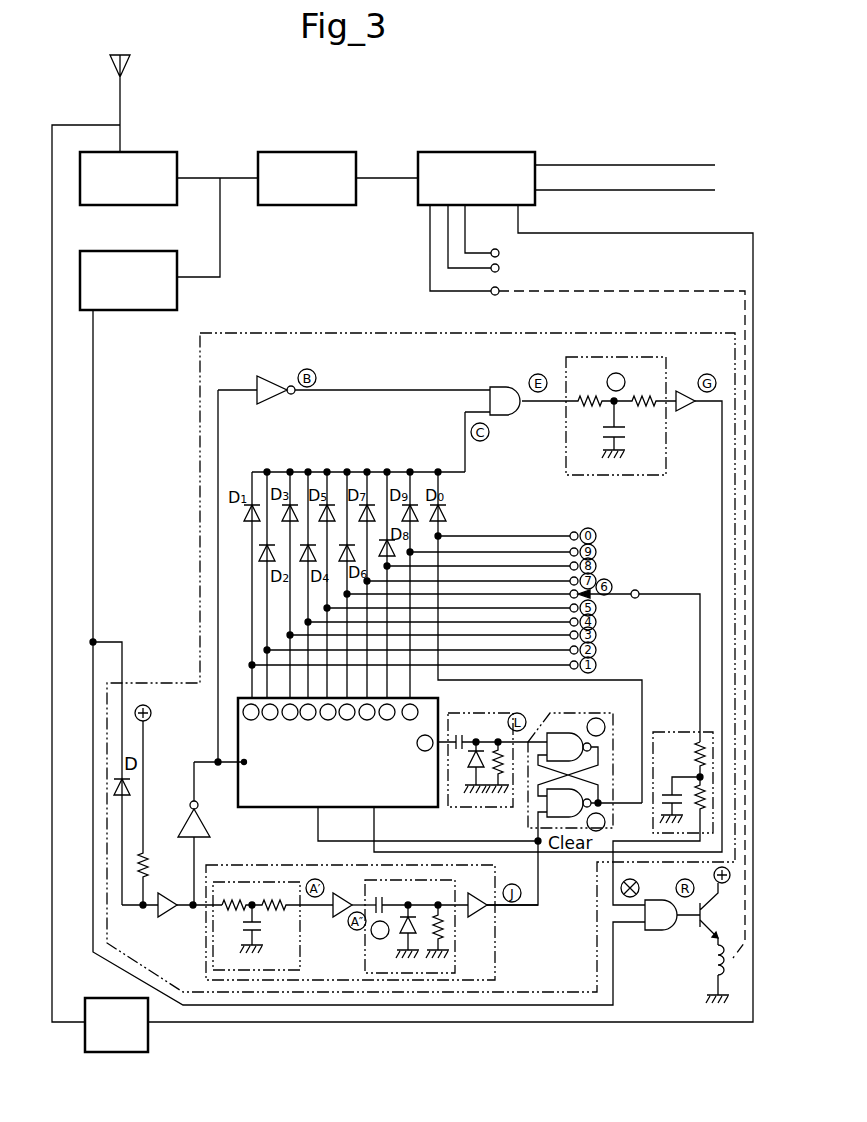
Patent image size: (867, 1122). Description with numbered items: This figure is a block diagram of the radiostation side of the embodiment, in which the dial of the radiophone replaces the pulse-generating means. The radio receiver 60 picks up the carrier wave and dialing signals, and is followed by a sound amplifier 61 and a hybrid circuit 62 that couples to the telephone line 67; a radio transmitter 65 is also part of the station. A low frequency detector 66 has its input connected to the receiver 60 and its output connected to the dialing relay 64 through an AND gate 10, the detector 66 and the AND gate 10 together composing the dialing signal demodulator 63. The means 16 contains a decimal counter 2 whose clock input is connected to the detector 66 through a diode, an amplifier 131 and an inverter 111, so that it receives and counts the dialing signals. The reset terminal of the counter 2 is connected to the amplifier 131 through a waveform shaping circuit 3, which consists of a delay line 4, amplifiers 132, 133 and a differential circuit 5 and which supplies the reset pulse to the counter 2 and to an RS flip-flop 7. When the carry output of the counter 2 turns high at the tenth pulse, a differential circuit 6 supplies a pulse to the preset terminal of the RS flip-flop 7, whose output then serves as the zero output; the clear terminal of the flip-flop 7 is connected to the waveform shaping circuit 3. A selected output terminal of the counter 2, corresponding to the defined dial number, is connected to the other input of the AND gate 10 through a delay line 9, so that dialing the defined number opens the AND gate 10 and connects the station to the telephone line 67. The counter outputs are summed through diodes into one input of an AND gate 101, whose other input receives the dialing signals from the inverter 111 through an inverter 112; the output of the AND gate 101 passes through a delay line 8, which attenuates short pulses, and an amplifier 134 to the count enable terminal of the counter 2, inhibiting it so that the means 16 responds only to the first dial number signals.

The radio receiver 60 is at (160, 150).
The sound amplifier 61 is at (270, 150).
The hybrid circuit 62 is at (430, 150).
The dialing signal demodulator 63 is at (96, 524).
The dialing relay 64 is at (520, 270).
The radio transmitter 65 is at (100, 997).
The low frequency detector 66 is at (158, 250).
The telephone line 67 is at (648, 192).
The means 16 is at (290, 332).
The inverter 112 is at (280, 382).
The AND gate 101 is at (496, 384).
The amplifier 134 is at (690, 414).
The delay line 8 is at (660, 476).
The decimal counter 2 is at (254, 812).
The inverter 111 is at (185, 822).
The differential circuit 6 is at (480, 713).
The RS flip-flop 7 is at (552, 720).
The delay line 9 is at (662, 732).
The amplifier 131 is at (163, 917).
The amplifier 132 is at (332, 916).
The delay line 4 is at (300, 958).
The amplifier 133 is at (497, 912).
The differential circuit 5 is at (455, 948).
The waveform shaping circuit 3 is at (497, 974).
The AND gate 10 is at (656, 932).